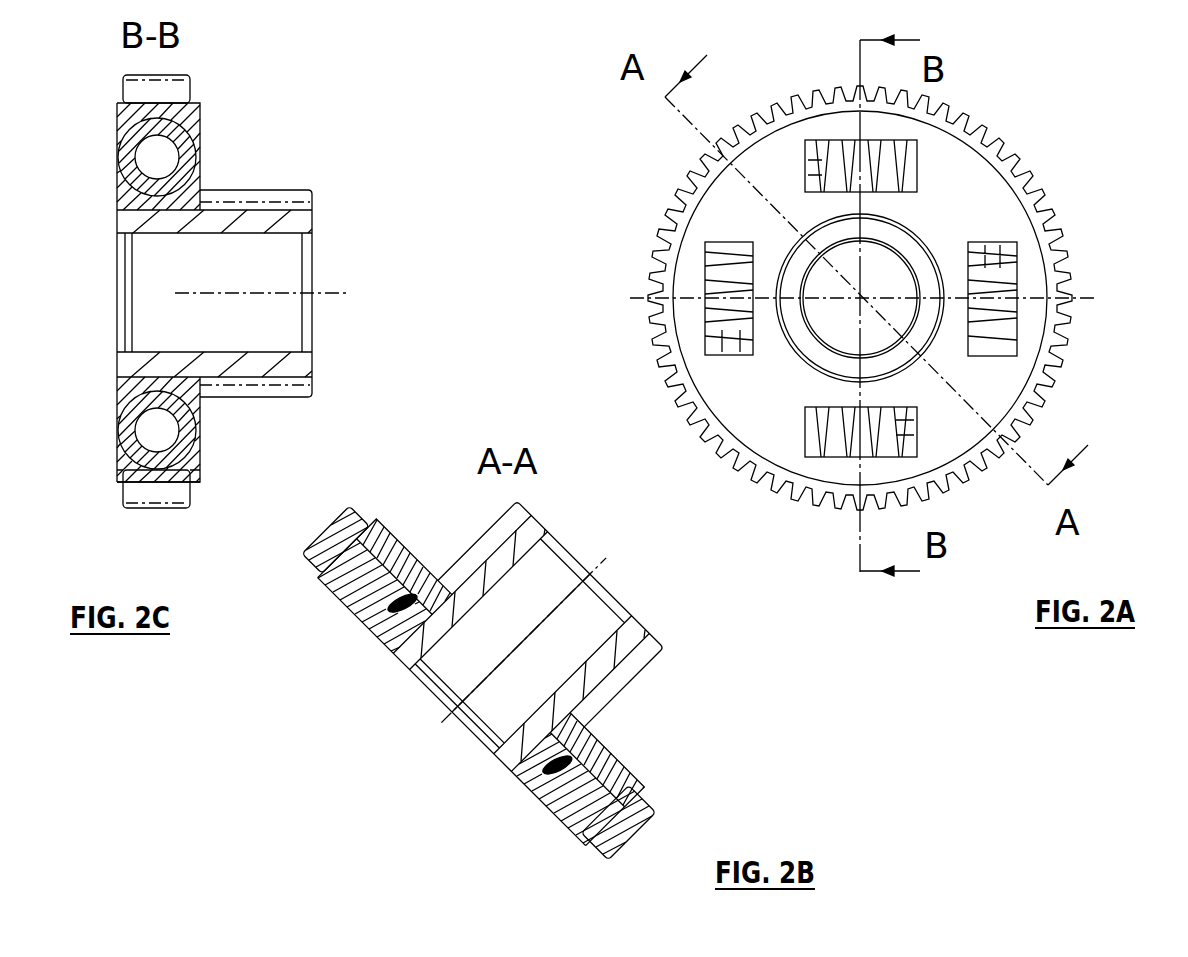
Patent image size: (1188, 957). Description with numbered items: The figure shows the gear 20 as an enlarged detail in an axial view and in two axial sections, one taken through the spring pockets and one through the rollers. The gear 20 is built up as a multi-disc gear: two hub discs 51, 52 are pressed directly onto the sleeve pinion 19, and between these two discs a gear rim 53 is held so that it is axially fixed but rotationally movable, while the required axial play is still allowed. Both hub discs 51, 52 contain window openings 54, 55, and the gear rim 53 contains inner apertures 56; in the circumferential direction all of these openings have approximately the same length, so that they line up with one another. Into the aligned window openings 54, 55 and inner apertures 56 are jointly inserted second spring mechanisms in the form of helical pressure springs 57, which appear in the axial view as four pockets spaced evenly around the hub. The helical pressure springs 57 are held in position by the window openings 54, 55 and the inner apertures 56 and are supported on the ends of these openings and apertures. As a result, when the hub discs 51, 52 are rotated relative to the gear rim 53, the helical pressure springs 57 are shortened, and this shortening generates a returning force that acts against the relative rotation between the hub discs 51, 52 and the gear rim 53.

In FIG. 2C, the sleeve pinion 19 is at (240, 217).
In FIG. 2B, the sleeve pinion 19 is at (636, 665).
In FIG. 2C, the gear 20 is at (372, 180).
In FIG. 2B, the gear 20 is at (640, 728).
In FIG. 2A, the gear 20 is at (1082, 196).
In FIG. 2C, the hub disc 51 is at (172, 176).
In FIG. 2A, the hub disc 51 is at (763, 407).
In FIG. 2C, the hub disc 52 is at (212, 186).
In FIG. 2C, the gear rim 53 is at (190, 90).
In FIG. 2B, the gear rim 53 is at (343, 527).
In FIG. 2A, the gear rim 53 is at (717, 437).
In FIG. 2C, the window opening 54 is at (138, 492).
In FIG. 2B, the window opening 54 is at (380, 550).
In FIG. 2A, the window opening 54 is at (817, 443).
In FIG. 2C, the window opening 55 is at (200, 480).
In FIG. 2B, the window opening 55 is at (410, 567).
In FIG. 2C, the inner aperture 56 is at (165, 446).
In FIG. 2A, the helical pressure spring 57 is at (838, 453).